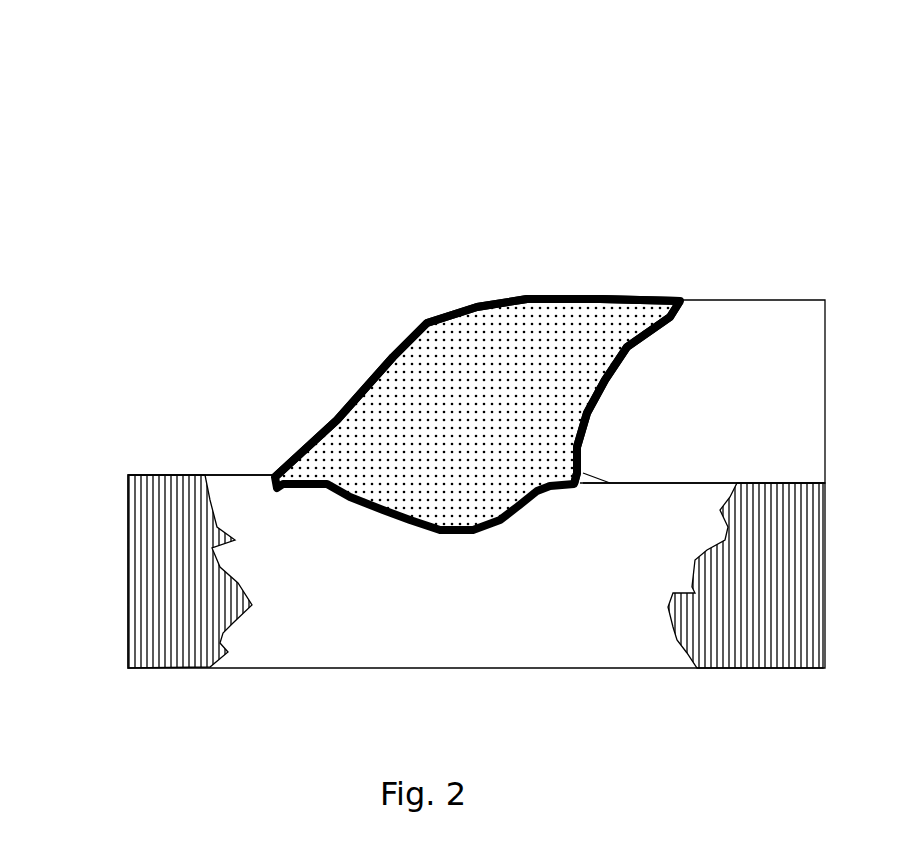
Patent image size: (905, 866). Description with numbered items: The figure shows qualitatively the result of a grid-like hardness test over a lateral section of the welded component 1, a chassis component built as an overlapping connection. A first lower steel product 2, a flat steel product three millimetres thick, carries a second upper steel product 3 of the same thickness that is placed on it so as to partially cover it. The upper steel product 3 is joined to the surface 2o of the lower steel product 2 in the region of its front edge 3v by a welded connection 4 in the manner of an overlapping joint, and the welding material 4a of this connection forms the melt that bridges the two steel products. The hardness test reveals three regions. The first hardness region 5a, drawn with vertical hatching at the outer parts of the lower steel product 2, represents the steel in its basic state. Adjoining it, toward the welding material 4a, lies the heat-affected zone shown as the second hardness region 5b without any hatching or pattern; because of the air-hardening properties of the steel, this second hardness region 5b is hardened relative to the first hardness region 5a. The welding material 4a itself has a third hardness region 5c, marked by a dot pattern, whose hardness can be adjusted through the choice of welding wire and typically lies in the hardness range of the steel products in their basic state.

The welded component 1 is at (540, 166).
The first lower steel product 2 is at (355, 618).
The surface of the lower steel product 2o is at (177, 474).
The second upper steel product 3 is at (717, 315).
The front edge 3v is at (583, 363).
The welded connection 4 is at (222, 360).
The welding material 4a is at (423, 375).
The first hardness region 5a is at (167, 637).
The second hardness region 5b is at (792, 323).
The third hardness region 5c is at (477, 350).